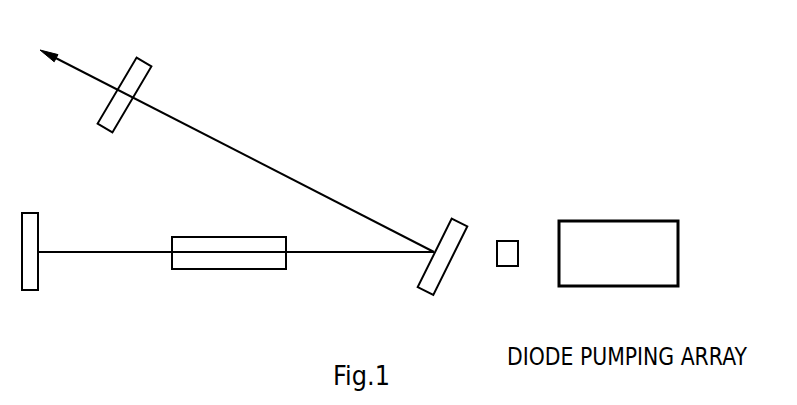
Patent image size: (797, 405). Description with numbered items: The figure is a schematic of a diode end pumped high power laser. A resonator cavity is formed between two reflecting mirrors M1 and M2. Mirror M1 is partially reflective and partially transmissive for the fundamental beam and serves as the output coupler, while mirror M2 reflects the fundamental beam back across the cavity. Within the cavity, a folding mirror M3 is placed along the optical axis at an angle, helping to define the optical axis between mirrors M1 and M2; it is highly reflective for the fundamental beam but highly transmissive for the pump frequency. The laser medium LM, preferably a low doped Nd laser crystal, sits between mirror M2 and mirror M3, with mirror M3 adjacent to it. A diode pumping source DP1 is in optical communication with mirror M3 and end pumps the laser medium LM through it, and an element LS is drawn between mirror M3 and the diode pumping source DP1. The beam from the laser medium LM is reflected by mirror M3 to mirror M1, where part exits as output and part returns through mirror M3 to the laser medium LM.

The mirror M1 is at (135, 77).
The mirror M2 is at (30, 232).
The folding mirror M3 is at (447, 237).
The laser medium LM is at (229, 233).
The lens LS is at (504, 235).
The diode pumping source DP1 is at (651, 253).